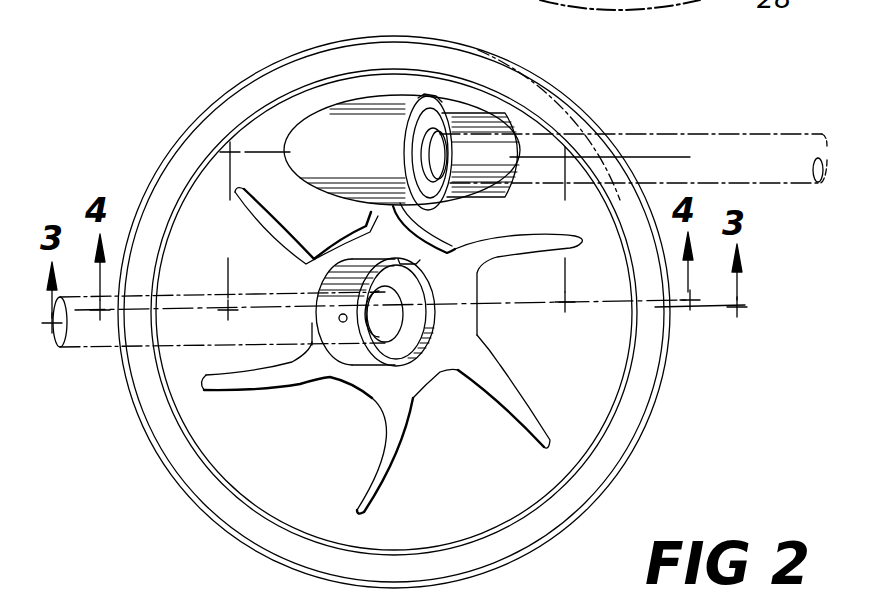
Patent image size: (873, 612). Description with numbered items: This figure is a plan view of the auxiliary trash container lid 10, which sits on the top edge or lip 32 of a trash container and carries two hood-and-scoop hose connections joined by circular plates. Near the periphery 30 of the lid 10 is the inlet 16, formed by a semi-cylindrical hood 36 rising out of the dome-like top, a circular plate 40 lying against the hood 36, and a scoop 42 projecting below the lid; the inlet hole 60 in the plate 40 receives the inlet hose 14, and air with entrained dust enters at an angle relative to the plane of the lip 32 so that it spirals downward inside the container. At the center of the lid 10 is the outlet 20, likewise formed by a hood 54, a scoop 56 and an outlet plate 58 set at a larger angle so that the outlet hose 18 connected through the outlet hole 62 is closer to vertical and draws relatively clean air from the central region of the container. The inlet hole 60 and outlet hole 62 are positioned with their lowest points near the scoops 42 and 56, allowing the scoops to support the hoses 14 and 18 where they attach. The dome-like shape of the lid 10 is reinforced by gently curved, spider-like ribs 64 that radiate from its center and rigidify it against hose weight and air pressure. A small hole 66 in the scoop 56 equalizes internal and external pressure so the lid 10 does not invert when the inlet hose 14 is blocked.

The auxiliary trash container lid 10 is at (232, 81).
The inlet hose 14 is at (725, 140).
The inlet 16 is at (444, 110).
The outlet hose 18 is at (105, 350).
The outlet 20 is at (377, 262).
The periphery 30 is at (406, 42).
The top edge or lip 32 is at (549, 96).
The hood 36 is at (352, 125).
The circular plate 40 is at (430, 96).
The scoop 42 is at (482, 166).
The hood 54 is at (447, 318).
The scoop 56 is at (324, 326).
The outlet plate 58 is at (466, 270).
The inlet hole 60 is at (422, 153).
The outlet hole 62 is at (396, 345).
The ribs 64 is at (245, 388).
The hole 66 is at (344, 326).